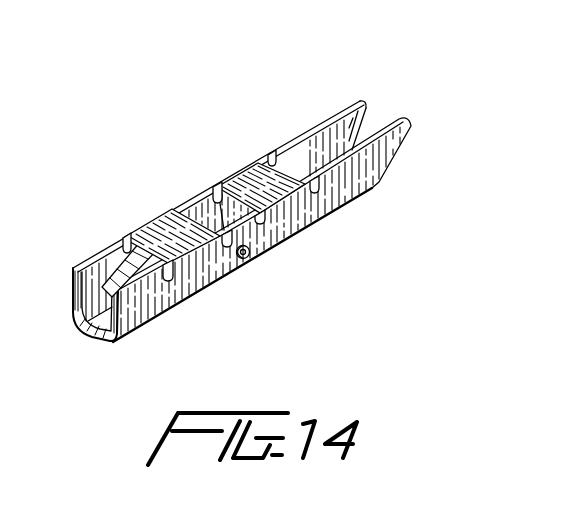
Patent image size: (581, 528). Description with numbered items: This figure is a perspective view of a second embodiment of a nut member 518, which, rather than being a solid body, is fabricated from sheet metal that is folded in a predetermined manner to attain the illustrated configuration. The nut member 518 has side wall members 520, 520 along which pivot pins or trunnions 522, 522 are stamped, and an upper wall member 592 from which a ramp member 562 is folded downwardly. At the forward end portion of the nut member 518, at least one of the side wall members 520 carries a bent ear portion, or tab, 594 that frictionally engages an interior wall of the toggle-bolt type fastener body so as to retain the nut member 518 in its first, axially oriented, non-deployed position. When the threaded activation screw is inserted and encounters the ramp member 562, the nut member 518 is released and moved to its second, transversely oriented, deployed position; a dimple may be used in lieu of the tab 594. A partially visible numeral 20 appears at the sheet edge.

The nut member 518 is at (252, 160).
The side wall members 520 is at (318, 130).
The pivot pins or trunnions 522 is at (250, 258).
The ramp member 562 is at (97, 262).
The upper wall member 592 is at (170, 210).
The bent ear portion or tab 594 is at (367, 100).
The partial numeral at sheet edge 20 is at (13, 350).